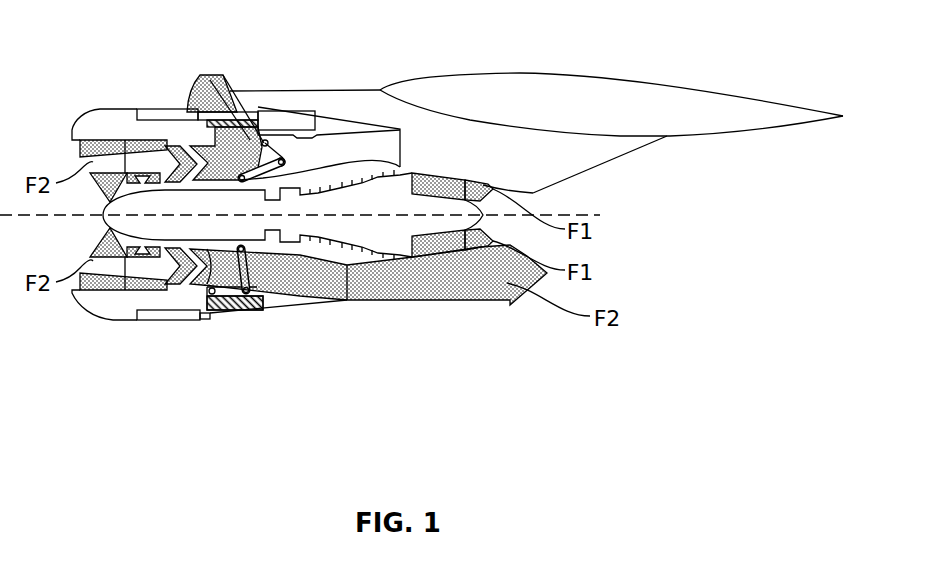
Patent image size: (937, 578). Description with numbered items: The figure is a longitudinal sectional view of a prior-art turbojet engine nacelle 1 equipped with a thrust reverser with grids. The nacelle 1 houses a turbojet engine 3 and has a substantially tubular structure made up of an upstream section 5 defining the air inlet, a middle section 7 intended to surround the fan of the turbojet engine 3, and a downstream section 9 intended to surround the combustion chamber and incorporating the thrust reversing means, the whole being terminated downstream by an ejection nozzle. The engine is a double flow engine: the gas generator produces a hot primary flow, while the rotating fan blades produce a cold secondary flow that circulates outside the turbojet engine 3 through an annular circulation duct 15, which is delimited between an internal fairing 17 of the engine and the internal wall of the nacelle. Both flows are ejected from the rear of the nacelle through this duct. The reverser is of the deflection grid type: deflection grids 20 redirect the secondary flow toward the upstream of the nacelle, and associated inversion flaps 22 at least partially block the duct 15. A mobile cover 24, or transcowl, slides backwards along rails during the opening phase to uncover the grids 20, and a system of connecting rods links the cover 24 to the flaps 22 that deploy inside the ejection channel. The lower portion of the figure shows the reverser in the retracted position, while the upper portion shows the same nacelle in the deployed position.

The nacelle 1 is at (210, 320).
The turbojet engine 3 is at (312, 264).
The upstream section 5 is at (114, 112).
The middle section 7 is at (157, 109).
The downstream section 9 is at (313, 307).
The circulation duct 15 is at (267, 270).
The internal fairing 17 is at (203, 284).
The deflection grids 20 is at (196, 94).
The inversion flaps 22 is at (236, 112).
The mobile cover 24 is at (283, 112).